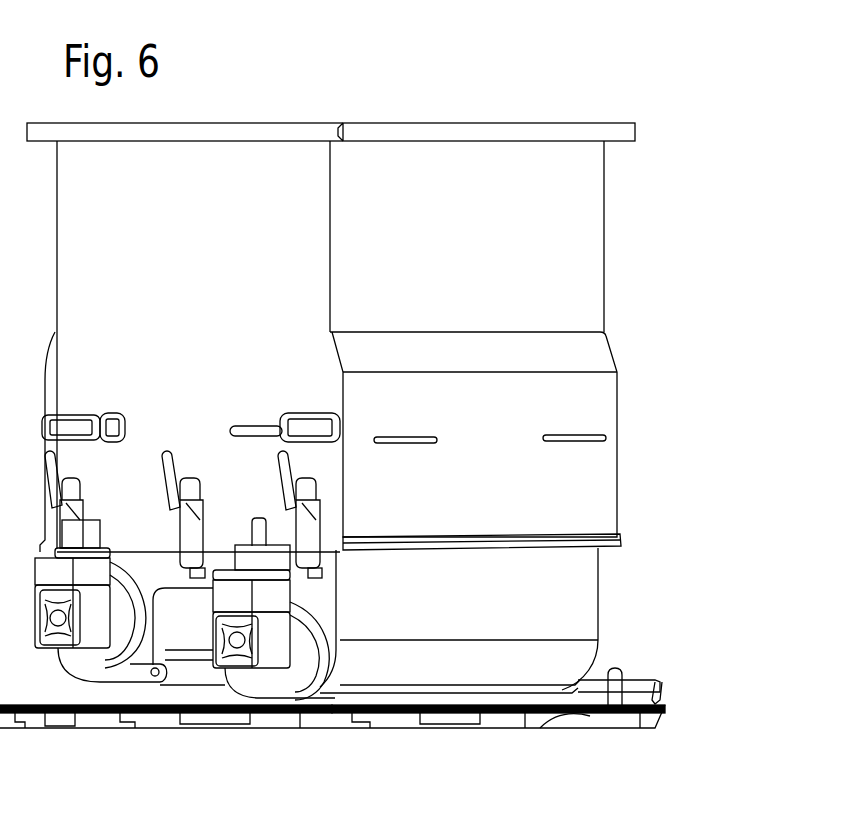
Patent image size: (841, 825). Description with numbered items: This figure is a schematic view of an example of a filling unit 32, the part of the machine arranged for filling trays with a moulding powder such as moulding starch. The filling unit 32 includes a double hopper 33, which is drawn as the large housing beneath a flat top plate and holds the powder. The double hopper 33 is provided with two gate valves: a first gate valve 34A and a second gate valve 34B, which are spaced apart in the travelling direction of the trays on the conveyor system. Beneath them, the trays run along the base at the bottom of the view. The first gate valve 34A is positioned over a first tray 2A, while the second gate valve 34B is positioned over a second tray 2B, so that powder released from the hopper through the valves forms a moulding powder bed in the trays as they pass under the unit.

The double hopper 33 is at (372, 122).
The filling unit 32 is at (572, 260).
The first gate valve 34A is at (118, 680).
The second gate valve 34B is at (258, 706).
The first tray 2A is at (156, 718).
The second tray 2B is at (328, 720).